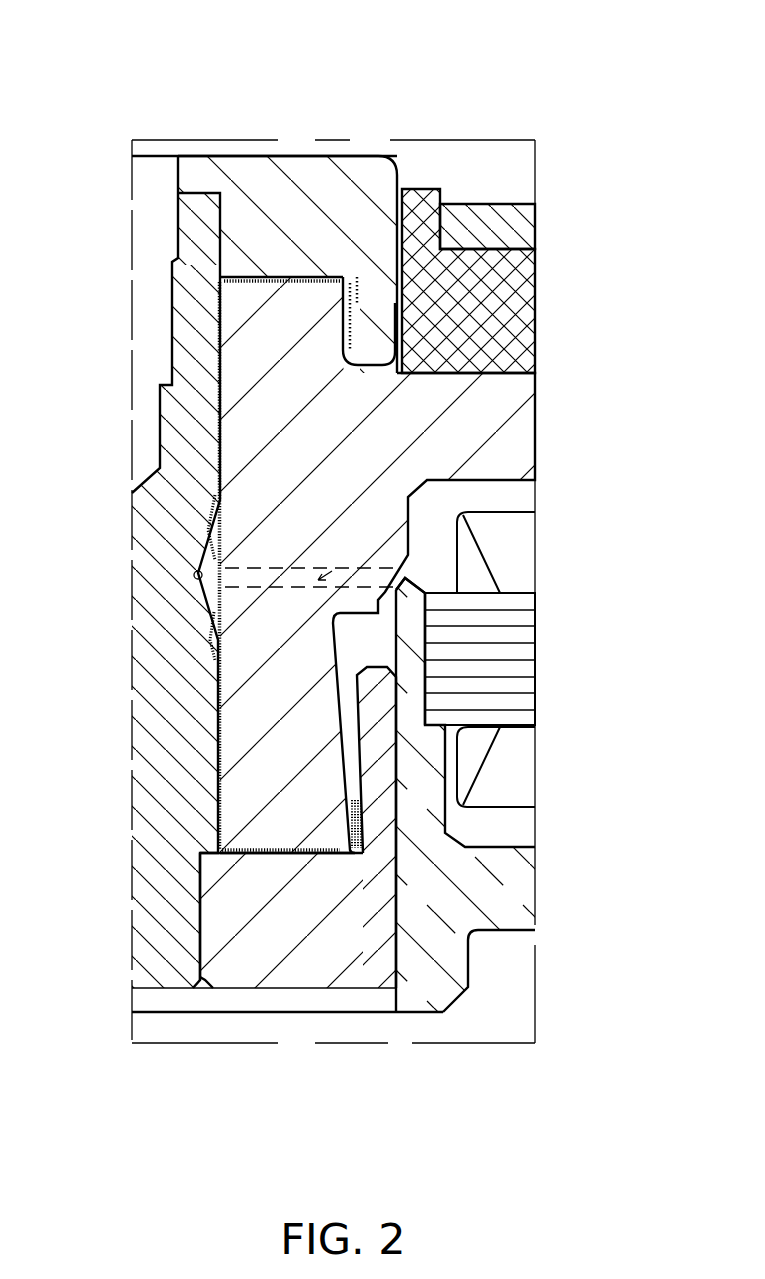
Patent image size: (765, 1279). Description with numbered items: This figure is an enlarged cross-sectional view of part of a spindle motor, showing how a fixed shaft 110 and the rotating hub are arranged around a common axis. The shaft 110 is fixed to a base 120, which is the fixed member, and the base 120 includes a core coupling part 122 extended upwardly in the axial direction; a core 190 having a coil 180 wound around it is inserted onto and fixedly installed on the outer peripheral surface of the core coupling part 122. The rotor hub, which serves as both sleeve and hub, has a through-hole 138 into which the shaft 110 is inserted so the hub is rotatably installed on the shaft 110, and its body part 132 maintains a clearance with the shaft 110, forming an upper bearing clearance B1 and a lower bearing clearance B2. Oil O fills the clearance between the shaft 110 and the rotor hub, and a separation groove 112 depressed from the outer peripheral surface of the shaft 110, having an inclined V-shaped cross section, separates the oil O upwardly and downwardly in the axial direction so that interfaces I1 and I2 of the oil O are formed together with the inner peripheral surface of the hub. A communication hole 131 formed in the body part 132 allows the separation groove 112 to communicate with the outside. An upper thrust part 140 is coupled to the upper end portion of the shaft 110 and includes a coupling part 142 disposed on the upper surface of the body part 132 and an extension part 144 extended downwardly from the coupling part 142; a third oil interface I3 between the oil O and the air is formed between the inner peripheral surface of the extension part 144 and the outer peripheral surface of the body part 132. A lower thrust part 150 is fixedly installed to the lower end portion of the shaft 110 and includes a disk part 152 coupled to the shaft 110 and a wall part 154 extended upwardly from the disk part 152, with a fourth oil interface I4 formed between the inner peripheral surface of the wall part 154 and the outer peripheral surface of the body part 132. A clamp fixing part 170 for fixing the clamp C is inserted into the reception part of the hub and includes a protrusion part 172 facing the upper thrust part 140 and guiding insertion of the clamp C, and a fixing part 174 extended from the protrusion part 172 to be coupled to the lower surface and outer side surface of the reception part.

The shaft 110 is at (124, 625).
The separation groove 112 is at (196, 573).
The base 120 is at (534, 795).
The core coupling part 122 is at (412, 683).
The communication hole 131 is at (330, 553).
The body part 132 is at (300, 442).
The through-hole 138 is at (205, 878).
The upper thrust part 140 is at (292, 188).
The coupling part 142 is at (255, 208).
The extension part 144 is at (383, 305).
The lower thrust part 150 is at (314, 921).
The disk part 152 is at (305, 920).
The wall part 154 is at (393, 835).
The clamp fixing part 170 is at (477, 188).
The protrusion part 172 is at (446, 300).
The fixing part 174 is at (508, 276).
The coil 180 is at (525, 752).
The core 190 is at (527, 686).
The clamp C is at (528, 226).
The oil interface I1 is at (212, 528).
The oil interface I2 is at (208, 614).
The third oil interface I3 is at (372, 340).
The fourth oil interface I4 is at (330, 800).
The upper bearing clearance B1 is at (220, 412).
The lower bearing clearance B2 is at (217, 730).
The oil O is at (218, 458).